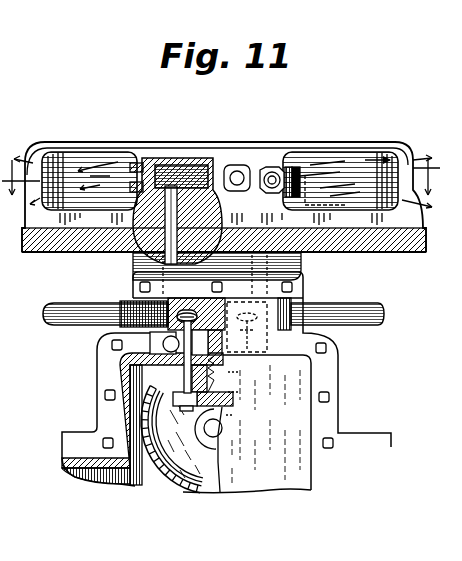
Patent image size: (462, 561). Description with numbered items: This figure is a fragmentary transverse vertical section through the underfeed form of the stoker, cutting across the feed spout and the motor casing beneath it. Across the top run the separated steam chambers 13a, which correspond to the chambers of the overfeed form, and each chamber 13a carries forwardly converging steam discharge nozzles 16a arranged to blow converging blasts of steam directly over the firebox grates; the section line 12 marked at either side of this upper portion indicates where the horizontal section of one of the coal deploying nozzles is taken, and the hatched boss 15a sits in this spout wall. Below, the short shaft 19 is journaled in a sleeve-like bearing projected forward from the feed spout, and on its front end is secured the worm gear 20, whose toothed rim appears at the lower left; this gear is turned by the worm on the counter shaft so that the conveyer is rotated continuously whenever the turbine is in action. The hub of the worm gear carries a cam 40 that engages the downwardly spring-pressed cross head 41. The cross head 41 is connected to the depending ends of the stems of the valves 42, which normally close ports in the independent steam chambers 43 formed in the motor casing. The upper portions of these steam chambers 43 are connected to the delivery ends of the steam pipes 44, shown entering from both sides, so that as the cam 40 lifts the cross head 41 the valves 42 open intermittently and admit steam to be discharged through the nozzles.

The section line 12 is at (224, 187).
The steam chamber 13a is at (182, 172).
The hatched boss 15a is at (133, 262).
The steam discharge nozzle 16a is at (298, 166).
The short shaft 19 is at (224, 436).
The worm gear 20 is at (183, 492).
The cam 40 is at (226, 413).
The cross head 41 is at (177, 399).
The valve 42 is at (190, 358).
The steam chamber 43 is at (184, 312).
The steam pipe 44 is at (62, 309).